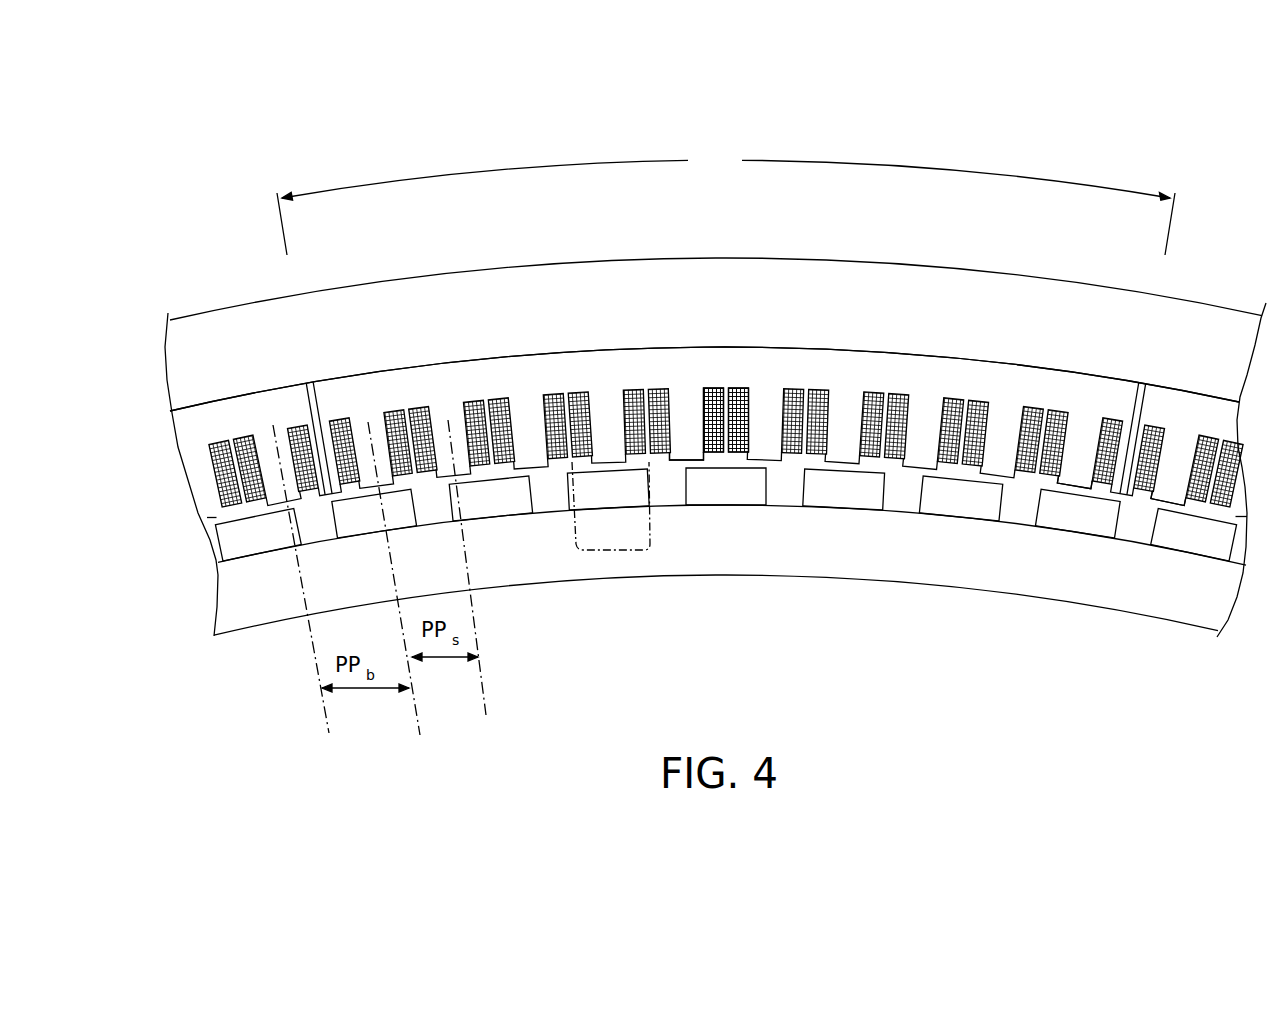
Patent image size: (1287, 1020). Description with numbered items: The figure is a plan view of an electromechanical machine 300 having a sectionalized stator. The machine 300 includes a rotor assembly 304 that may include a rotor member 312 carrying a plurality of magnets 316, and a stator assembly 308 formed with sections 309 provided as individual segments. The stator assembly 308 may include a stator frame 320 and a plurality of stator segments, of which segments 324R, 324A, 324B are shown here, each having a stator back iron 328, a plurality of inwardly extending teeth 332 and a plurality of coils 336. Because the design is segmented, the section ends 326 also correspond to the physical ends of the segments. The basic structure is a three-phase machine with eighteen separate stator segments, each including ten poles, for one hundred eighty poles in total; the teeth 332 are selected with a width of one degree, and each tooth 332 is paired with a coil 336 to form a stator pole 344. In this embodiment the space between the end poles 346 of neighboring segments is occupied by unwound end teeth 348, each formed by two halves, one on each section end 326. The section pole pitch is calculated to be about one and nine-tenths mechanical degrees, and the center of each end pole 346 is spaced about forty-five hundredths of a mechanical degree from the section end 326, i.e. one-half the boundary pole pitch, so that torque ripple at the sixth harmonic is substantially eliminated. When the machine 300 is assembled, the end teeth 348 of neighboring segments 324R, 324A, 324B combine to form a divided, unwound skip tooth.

The electromechanical machine 300 is at (715, 396).
The rotor assembly 304 is at (730, 575).
The stator assembly 308 is at (713, 440).
The sections 309 is at (726, 201).
The rotor member 312 is at (1065, 578).
The magnets 316 is at (855, 492).
The stator frame 320 is at (262, 318).
The stator segment 324R is at (228, 420).
The stator segment 324A is at (883, 370).
The stator segment 324B is at (1222, 410).
The section end 326 is at (314, 380).
The stator back iron 328 is at (637, 372).
The teeth 332 is at (686, 415).
The coils 336 is at (718, 400).
The stator poles 344 is at (614, 552).
The end poles 346 is at (1078, 431).
The unwound end teeth 348 is at (1125, 496).